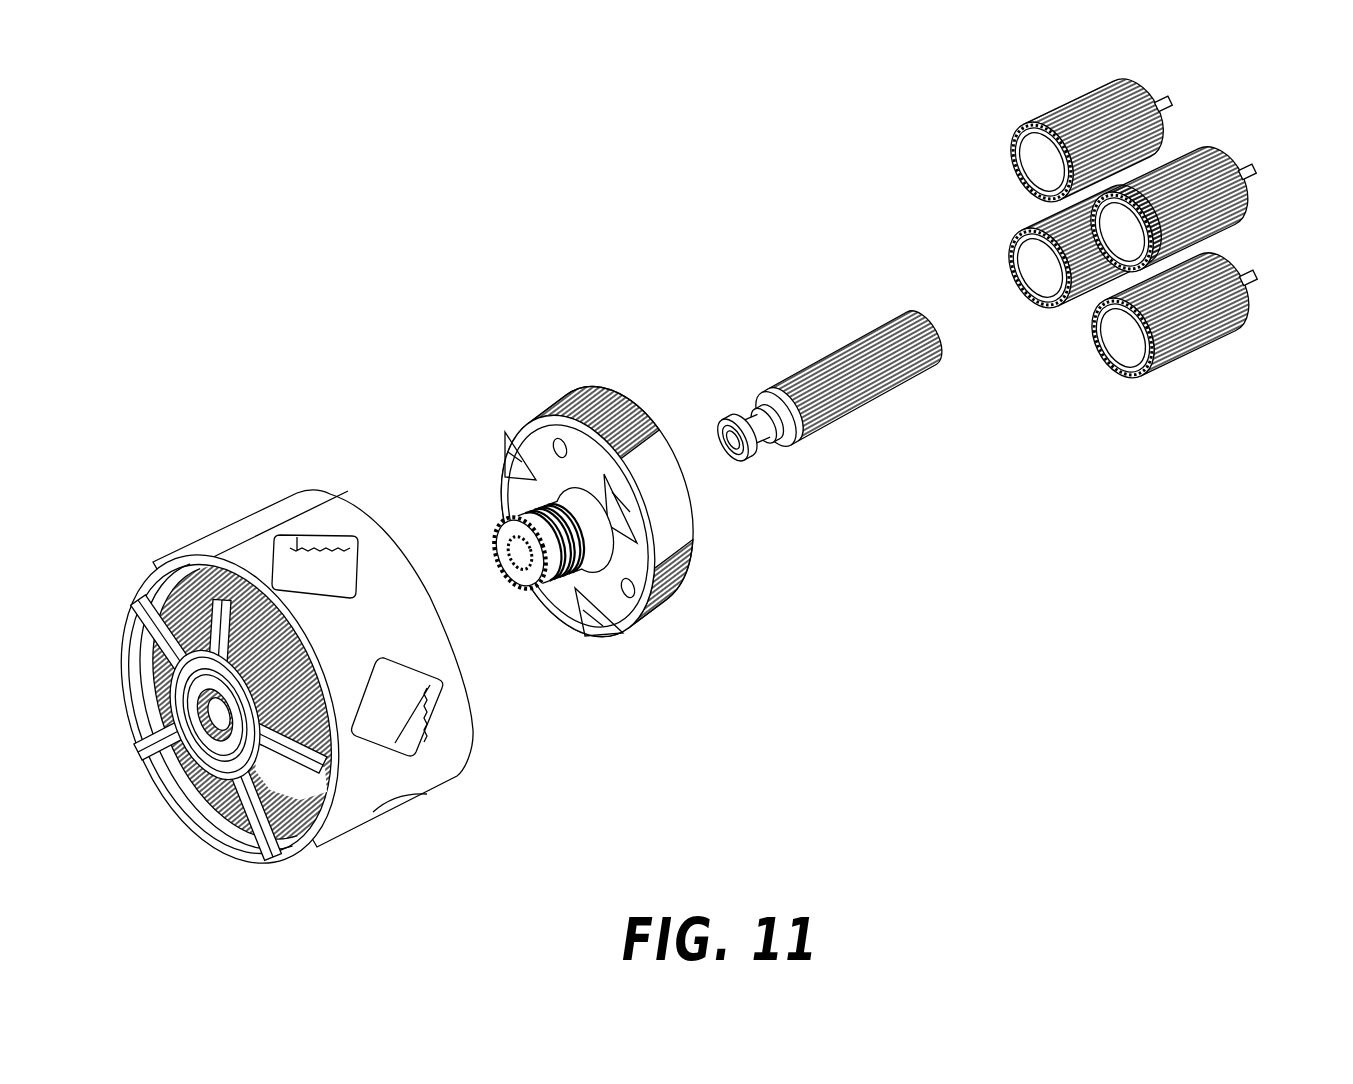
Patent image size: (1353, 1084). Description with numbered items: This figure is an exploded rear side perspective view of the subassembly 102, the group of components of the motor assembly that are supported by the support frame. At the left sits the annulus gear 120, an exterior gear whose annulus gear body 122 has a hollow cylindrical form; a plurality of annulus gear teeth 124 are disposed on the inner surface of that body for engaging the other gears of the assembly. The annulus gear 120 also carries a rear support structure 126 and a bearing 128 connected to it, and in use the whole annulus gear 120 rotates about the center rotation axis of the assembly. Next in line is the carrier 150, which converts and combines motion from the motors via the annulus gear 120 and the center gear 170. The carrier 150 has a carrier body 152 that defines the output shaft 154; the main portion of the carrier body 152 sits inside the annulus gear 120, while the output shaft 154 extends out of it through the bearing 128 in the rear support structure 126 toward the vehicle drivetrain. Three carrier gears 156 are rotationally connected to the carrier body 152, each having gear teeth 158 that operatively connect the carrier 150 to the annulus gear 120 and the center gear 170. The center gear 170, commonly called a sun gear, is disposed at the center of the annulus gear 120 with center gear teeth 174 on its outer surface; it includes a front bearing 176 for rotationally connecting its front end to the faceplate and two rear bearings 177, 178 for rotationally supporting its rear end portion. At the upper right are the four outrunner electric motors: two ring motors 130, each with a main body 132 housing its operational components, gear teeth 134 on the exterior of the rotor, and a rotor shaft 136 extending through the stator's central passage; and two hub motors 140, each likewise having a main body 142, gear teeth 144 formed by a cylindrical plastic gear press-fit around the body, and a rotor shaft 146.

The subassembly 102 is at (150, 112).
The annulus gear 120 is at (180, 492).
The annulus gear body 122 is at (300, 492).
The annulus gear teeth 124 is at (150, 690).
The rear support structure 126 is at (272, 855).
The bearing 128 is at (217, 770).
The ring motor 130 is at (975, 105).
The main body 132 is at (1045, 172).
The gear teeth 134 is at (1082, 92).
The rotor shaft 136 is at (1172, 93).
The hub motor 140 is at (1265, 96).
The main body 142 is at (1045, 268).
The gear teeth 144 is at (1027, 217).
The rotor shaft 146 is at (1248, 163).
The carrier 150 is at (493, 375).
The carrier body 152 is at (515, 500).
The output shaft 154 is at (530, 606).
The carrier gears 156 is at (565, 362).
The gear teeth 158 is at (607, 412).
The center gear 170 is at (763, 296).
The center gear teeth 174 is at (866, 320).
The front bearing 176 is at (937, 372).
The rear bearing 177 is at (782, 457).
The rear bearing 178 is at (750, 478).